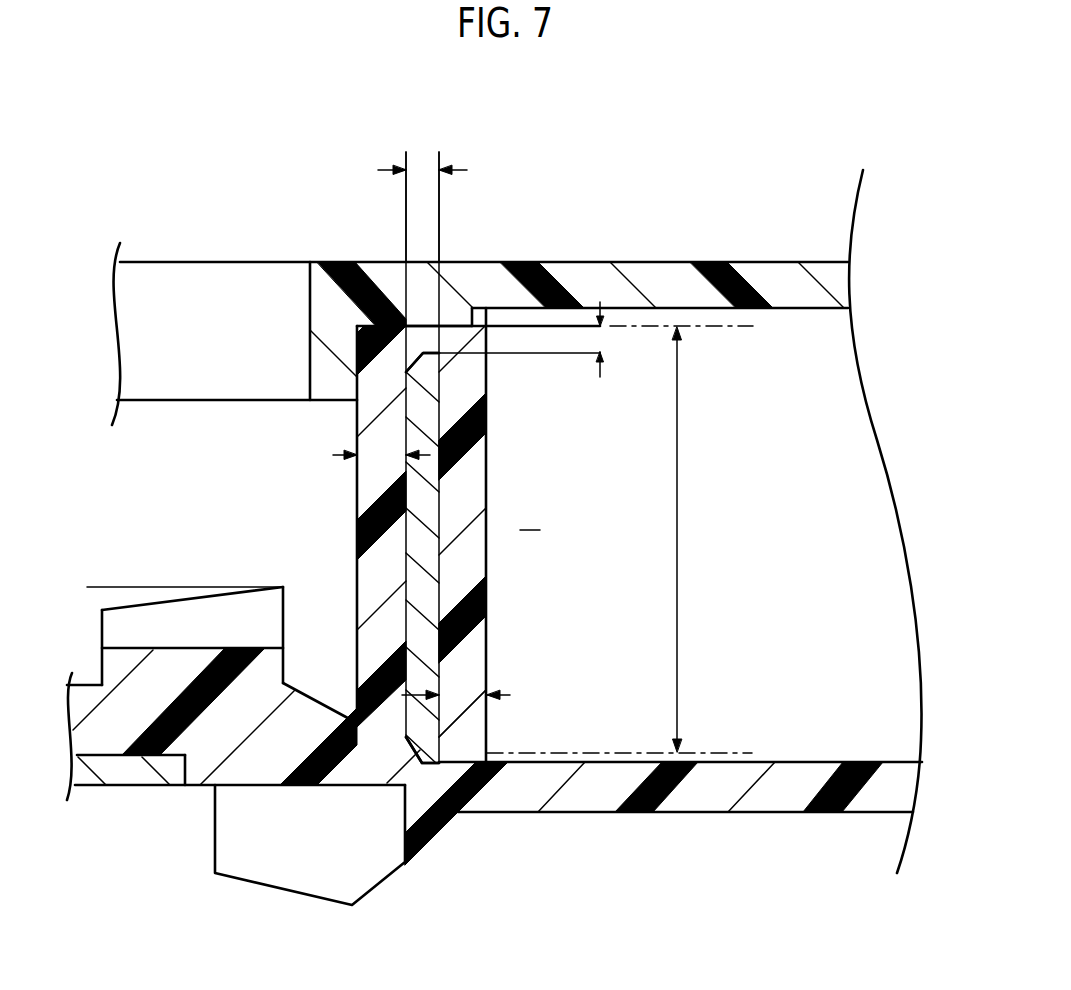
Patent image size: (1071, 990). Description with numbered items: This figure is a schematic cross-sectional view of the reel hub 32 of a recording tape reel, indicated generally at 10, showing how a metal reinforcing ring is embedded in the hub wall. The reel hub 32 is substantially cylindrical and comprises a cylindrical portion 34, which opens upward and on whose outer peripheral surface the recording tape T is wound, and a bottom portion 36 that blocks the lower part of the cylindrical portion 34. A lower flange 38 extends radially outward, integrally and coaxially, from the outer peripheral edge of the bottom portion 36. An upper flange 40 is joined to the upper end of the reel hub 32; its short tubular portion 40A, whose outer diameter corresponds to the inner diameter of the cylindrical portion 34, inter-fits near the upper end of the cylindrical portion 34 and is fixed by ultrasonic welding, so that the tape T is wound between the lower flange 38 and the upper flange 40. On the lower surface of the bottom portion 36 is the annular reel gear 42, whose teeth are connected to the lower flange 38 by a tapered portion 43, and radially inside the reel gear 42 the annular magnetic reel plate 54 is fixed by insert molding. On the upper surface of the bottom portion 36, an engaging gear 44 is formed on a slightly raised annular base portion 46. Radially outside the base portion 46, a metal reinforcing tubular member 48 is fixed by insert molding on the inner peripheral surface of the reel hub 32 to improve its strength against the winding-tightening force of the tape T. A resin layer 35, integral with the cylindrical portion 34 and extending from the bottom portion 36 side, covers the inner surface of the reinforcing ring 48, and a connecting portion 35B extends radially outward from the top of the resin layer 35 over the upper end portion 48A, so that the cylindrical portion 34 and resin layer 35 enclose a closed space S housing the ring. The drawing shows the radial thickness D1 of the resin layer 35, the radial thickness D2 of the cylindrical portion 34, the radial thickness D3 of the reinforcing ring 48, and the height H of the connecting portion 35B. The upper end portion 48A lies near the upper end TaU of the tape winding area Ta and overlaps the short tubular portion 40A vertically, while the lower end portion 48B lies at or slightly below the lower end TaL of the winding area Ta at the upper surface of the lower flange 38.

The sealing structure 10 is at (662, 134).
The upper flange 40 is at (663, 286).
The short tubular portion 40A is at (337, 337).
The resin layer 35 is at (356, 506).
The connecting portion 35B is at (455, 333).
The reinforcing tubular member 48 is at (428, 416).
The upper end portion 48A is at (428, 360).
The lower end portion 48B is at (432, 760).
The cylindrical portion 34 is at (487, 560).
The bottom portion 36 is at (283, 737).
The reel hub 32 is at (578, 541).
The lower flange 38 is at (752, 800).
The tapered portion 43 is at (428, 850).
The reel gear 42 is at (263, 872).
The annular base portion 46 is at (113, 665).
The engaging gear 44 is at (250, 605).
The reel plate 54 is at (132, 773).
The recording tape T is at (868, 487).
The thickness of the resin layer D1 is at (372, 454).
The thickness of the cylindrical portion D2 is at (462, 695).
The thickness of the reinforcing ring D3 is at (422, 168).
The height of the connecting portion H is at (606, 340).
The winding area Ta is at (682, 546).
The upper end of the winding area TaU is at (722, 327).
The lower end of the winding area TaL is at (725, 752).
The closed space S is at (427, 518).